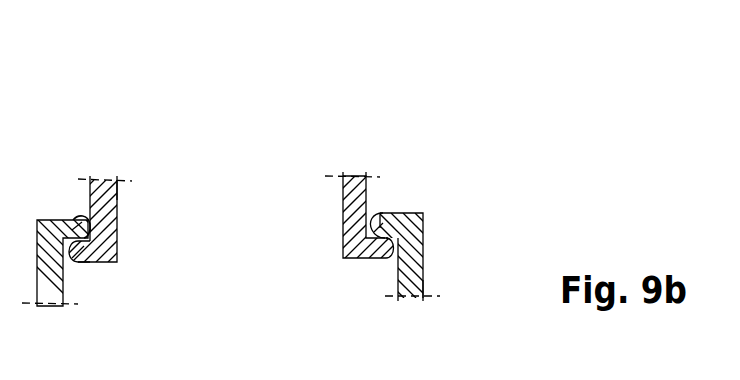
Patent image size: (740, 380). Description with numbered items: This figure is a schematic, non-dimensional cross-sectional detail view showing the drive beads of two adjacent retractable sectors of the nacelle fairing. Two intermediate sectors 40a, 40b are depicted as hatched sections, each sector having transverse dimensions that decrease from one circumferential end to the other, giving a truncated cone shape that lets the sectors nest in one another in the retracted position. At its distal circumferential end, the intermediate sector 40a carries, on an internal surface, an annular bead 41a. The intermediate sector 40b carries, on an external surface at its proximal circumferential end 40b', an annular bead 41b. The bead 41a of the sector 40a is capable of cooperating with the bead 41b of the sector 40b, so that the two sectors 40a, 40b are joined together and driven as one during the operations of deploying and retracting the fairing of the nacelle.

The annular bead 41a is at (78, 221).
The annular bead 41b is at (72, 263).
The intermediate sector 40b is at (114, 219).
The proximal circumferential end 40b' is at (183, 184).
The intermediate sector 40a is at (407, 254).